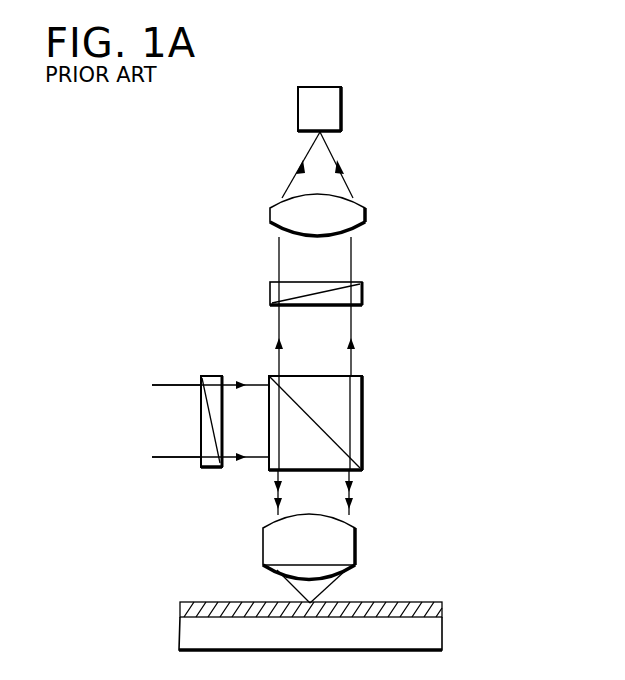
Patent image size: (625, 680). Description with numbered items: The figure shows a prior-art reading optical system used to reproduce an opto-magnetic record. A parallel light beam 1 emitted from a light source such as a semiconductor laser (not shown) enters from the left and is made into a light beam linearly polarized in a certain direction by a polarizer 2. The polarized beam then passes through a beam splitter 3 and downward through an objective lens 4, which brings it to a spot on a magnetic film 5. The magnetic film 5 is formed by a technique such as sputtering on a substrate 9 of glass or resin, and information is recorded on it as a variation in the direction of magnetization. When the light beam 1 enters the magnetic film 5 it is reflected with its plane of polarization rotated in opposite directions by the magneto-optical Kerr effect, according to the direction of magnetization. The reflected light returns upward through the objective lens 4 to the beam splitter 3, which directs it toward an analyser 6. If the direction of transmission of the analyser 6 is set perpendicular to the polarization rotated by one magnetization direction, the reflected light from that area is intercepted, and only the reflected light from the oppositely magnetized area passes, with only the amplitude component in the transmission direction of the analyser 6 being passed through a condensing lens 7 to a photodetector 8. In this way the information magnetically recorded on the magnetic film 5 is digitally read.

The parallel light beam 1 is at (173, 385).
The polarizer 2 is at (211, 376).
The beam splitter 3 is at (362, 423).
The objective lens 4 is at (355, 547).
The magnetic film 5 is at (410, 602).
The analyser 6 is at (362, 292).
The condensing lens 7 is at (365, 213).
The photodetector 8 is at (342, 108).
The substrate 9 is at (442, 632).